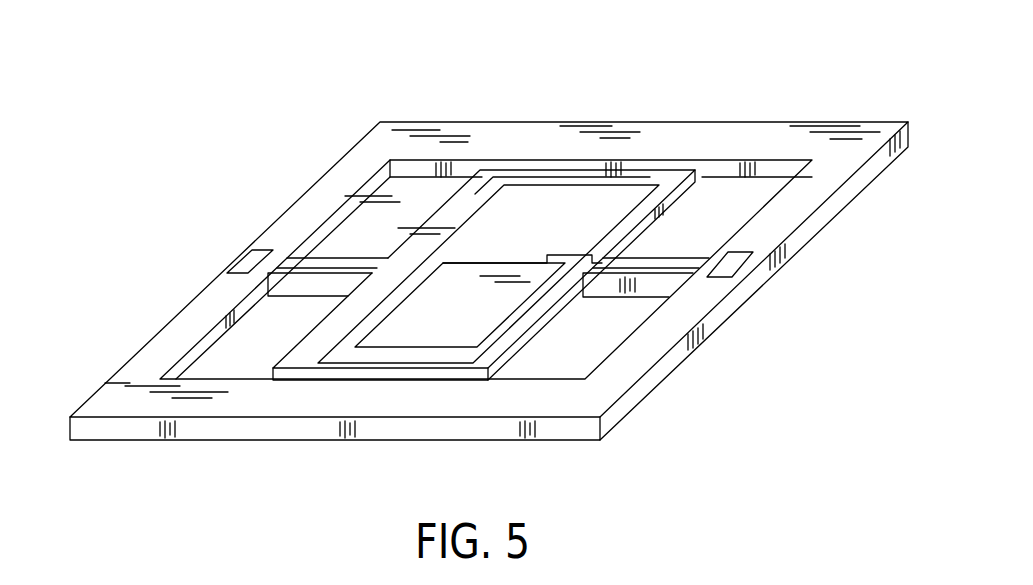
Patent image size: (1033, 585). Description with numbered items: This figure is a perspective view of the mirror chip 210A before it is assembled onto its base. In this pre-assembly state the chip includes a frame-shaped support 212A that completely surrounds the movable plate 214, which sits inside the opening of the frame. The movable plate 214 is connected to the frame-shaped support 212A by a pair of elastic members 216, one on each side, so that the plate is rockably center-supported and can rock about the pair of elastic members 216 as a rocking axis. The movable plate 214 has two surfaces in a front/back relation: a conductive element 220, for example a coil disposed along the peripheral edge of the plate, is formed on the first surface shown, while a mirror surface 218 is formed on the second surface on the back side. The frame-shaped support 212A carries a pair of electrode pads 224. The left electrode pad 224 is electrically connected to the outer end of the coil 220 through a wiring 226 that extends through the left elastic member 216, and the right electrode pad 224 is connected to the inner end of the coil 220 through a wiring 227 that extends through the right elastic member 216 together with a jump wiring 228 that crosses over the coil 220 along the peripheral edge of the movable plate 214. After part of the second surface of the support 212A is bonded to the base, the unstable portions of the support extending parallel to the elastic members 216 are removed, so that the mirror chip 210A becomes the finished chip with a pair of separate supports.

The mirror chip before assembly 210A is at (331, 84).
The frame-shaped support 212A is at (796, 214).
The movable plate 214 is at (515, 347).
The elastic members 216 is at (318, 278).
The mirror surface 218 is at (553, 317).
The conductive element (coil) 220 is at (575, 170).
The electrode pads 224 is at (242, 268).
The wiring 226 is at (342, 258).
The wiring 227 is at (690, 262).
The jump wiring 228 is at (560, 255).